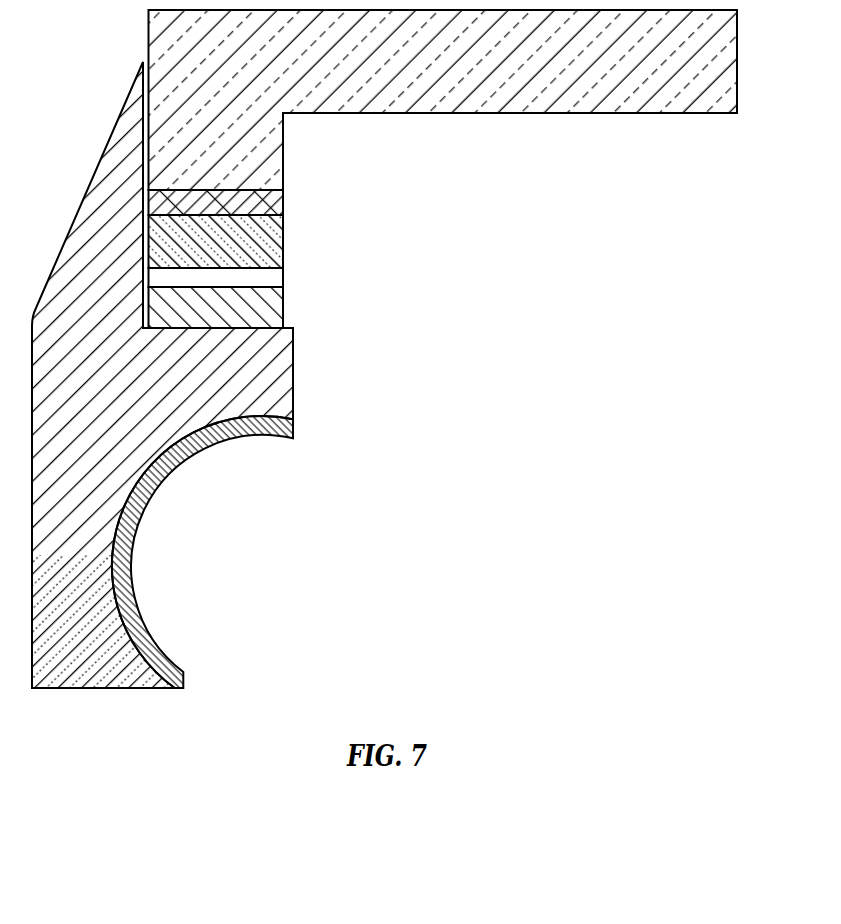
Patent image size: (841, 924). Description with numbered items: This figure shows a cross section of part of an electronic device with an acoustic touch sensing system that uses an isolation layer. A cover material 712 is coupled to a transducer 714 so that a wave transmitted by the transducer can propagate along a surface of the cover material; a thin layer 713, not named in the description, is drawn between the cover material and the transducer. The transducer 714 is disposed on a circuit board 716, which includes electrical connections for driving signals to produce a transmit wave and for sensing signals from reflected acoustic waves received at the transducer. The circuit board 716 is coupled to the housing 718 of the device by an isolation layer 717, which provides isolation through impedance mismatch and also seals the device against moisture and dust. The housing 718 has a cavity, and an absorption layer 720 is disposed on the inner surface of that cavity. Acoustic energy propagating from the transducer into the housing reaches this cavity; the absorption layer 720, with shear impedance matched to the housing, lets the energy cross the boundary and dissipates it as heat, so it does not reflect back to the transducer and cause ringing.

The cover material 712 is at (457, 70).
The first layer 713 is at (275, 203).
The transducer 714 is at (217, 245).
The circuit board 716 is at (273, 277).
The isolation layer 717 is at (273, 305).
The housing 718 is at (148, 409).
The absorption layer 720 is at (135, 524).